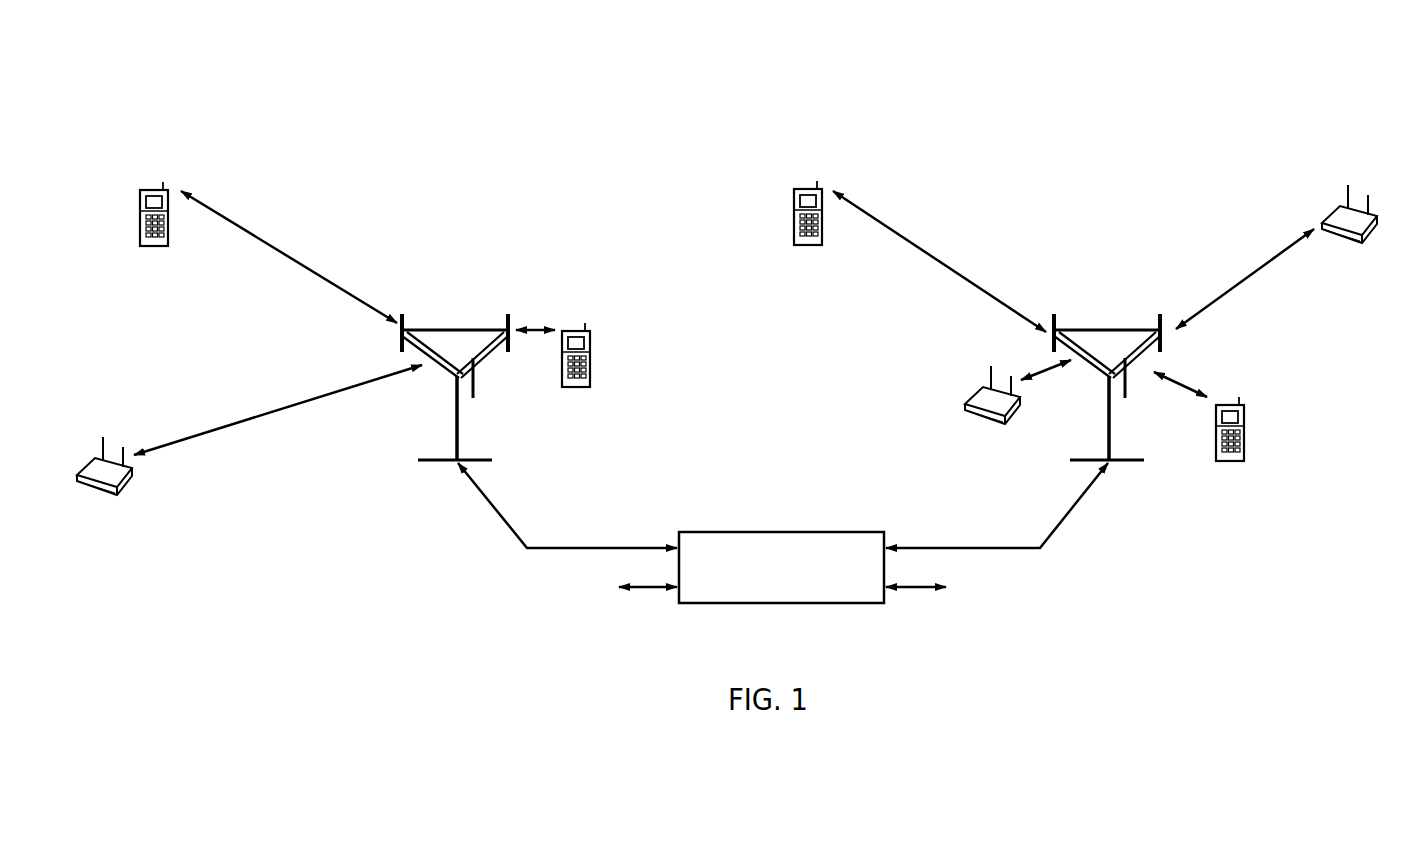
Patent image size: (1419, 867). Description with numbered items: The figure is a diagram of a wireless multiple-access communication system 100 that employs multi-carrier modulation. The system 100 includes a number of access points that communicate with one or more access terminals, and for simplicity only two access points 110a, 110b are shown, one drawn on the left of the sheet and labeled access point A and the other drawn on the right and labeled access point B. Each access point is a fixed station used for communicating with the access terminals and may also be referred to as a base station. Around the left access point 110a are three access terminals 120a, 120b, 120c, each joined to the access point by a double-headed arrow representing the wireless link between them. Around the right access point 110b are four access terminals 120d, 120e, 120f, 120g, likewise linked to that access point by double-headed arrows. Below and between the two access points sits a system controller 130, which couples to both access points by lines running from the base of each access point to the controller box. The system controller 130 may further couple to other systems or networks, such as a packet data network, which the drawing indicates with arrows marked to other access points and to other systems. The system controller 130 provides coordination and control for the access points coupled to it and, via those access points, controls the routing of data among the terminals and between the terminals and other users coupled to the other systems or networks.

The wireless multiple-access communication system 100 is at (1262, 95).
The access point 110a is at (462, 314).
The access point 110b is at (1115, 314).
The access terminal 120a is at (93, 460).
The access terminal 120b is at (157, 189).
The access terminal 120c is at (577, 330).
The access terminal 120d is at (812, 188).
The access terminal 120e is at (980, 390).
The access terminal 120f is at (1242, 389).
The access terminal 120g is at (1380, 200).
The system controller 130 is at (811, 531).